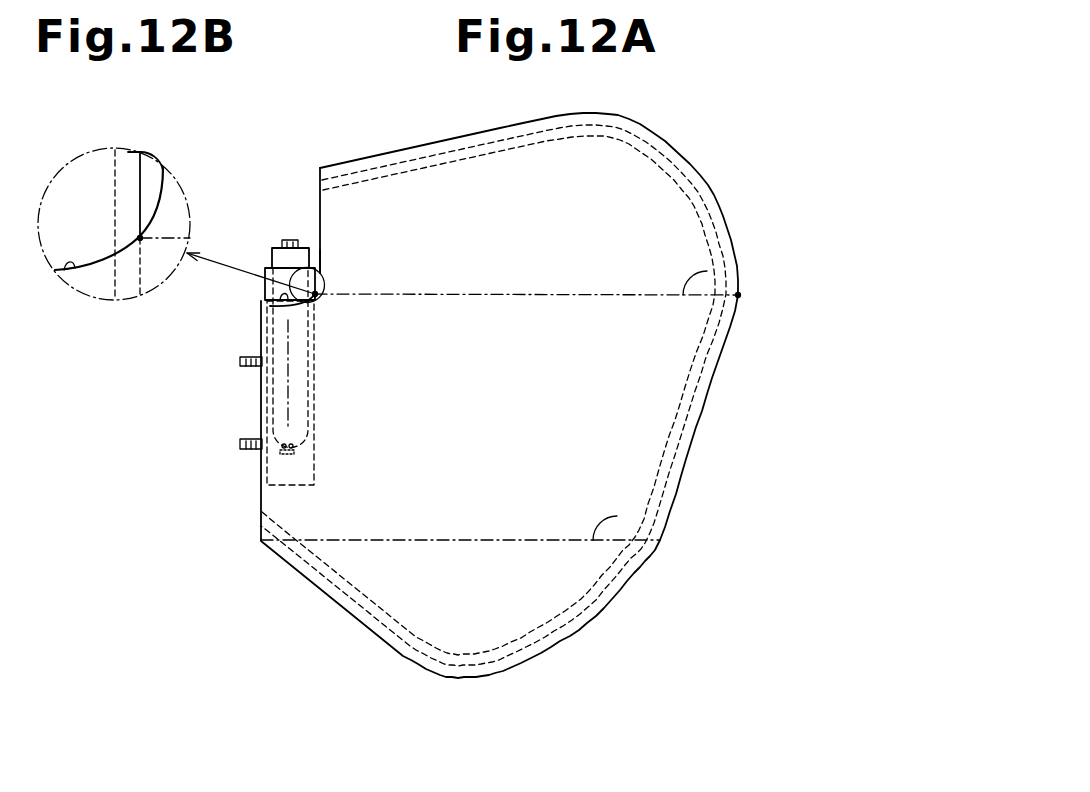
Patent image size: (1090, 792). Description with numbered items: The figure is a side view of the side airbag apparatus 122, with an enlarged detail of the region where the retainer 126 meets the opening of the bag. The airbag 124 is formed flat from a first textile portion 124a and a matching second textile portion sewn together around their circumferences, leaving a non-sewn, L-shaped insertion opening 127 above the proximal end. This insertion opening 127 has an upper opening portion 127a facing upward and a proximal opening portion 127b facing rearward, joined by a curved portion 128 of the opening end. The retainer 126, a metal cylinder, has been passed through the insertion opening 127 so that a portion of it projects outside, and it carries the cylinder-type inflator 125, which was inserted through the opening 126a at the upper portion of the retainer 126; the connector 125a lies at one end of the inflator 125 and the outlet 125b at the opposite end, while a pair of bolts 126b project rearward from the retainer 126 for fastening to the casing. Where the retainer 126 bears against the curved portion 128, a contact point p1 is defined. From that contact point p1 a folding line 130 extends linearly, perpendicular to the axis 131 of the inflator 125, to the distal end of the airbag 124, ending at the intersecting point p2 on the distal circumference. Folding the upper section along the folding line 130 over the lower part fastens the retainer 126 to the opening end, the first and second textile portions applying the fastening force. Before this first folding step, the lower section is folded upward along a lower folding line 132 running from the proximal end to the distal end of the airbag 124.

In FIG. 12A, the side airbag apparatus 122 is at (697, 142).
In FIG. 12A, the airbag 124 is at (700, 172).
In FIG. 12A, the first textile portion 124a is at (718, 196).
In FIG. 12B, the inflator 125 is at (116, 160).
In FIG. 12A, the inflator 125 is at (272, 251).
In FIG. 12A, the connector 125a is at (289, 240).
In FIG. 12A, the outlet 125b is at (262, 462).
In FIG. 12B, the retainer 126 is at (140, 152).
In FIG. 12A, the retainer 126 is at (265, 289).
In FIG. 12A, the opening 126a is at (298, 268).
In FIG. 12A, the bolts 126b is at (240, 358).
In FIG. 12A, the insertion opening 127 is at (320, 222).
In FIG. 12B, the upper opening portion 127a is at (62, 273).
In FIG. 12A, the upper opening portion 127a is at (286, 303).
In FIG. 12B, the proximal opening portion 127b is at (164, 168).
In FIG. 12A, the proximal opening portion 127b is at (321, 223).
In FIG. 12B, the curved portion 128 is at (162, 200).
In FIG. 12A, the curved portion 128 is at (325, 284).
In FIG. 12B, the folding line 130 is at (168, 241).
In FIG. 12A, the folding line 130 is at (707, 274).
In FIG. 12A, the axis 131 is at (300, 383).
In FIG. 12A, the lower folding line 132 is at (617, 517).
In FIG. 12B, the contact point p1 is at (142, 244).
In FIG. 12A, the contact point p1 is at (319, 297).
In FIG. 12A, the intersecting point p2 is at (740, 297).